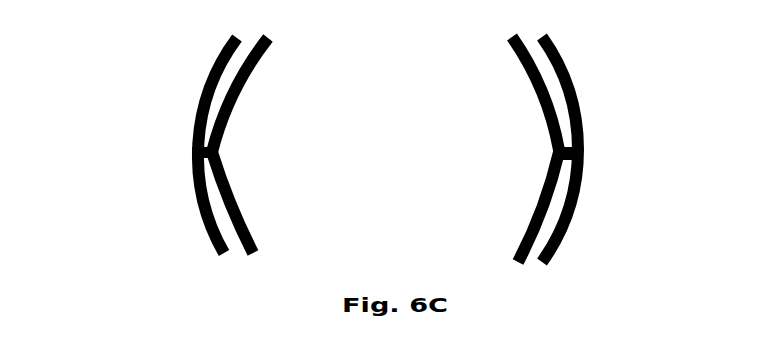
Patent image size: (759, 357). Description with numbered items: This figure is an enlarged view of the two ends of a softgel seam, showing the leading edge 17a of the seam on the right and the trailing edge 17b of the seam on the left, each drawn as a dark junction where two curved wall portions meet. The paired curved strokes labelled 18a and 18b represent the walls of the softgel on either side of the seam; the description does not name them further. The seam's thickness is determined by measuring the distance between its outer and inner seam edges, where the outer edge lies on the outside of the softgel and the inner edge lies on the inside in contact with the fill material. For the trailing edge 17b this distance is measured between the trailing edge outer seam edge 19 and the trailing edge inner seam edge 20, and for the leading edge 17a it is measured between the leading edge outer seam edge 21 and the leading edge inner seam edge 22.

The leading edge of the seam 17a is at (583, 157).
The trailing edge of the seam 17b is at (192, 150).
The outer arcuate wall 18a is at (200, 213).
The inner arcuate wall 18b is at (532, 73).
The trailing edge outer seam edge 19 is at (190, 152).
The trailing edge inner seam edge 20 is at (219, 152).
The leading edge outer seam edge 21 is at (583, 152).
The leading edge inner seam edge 22 is at (554, 155).